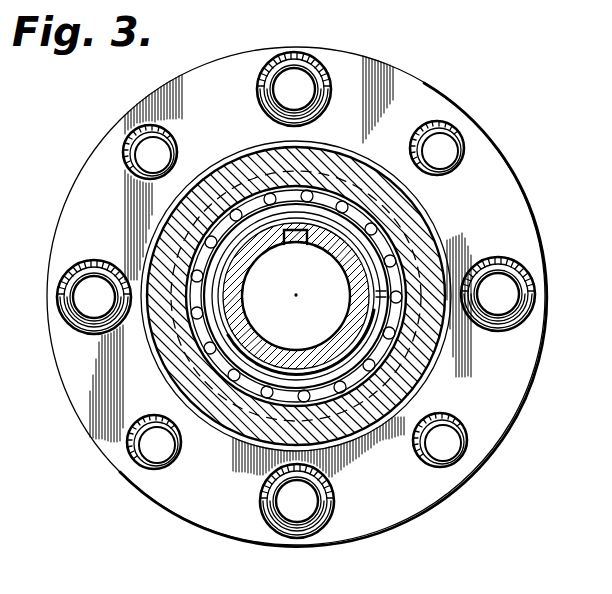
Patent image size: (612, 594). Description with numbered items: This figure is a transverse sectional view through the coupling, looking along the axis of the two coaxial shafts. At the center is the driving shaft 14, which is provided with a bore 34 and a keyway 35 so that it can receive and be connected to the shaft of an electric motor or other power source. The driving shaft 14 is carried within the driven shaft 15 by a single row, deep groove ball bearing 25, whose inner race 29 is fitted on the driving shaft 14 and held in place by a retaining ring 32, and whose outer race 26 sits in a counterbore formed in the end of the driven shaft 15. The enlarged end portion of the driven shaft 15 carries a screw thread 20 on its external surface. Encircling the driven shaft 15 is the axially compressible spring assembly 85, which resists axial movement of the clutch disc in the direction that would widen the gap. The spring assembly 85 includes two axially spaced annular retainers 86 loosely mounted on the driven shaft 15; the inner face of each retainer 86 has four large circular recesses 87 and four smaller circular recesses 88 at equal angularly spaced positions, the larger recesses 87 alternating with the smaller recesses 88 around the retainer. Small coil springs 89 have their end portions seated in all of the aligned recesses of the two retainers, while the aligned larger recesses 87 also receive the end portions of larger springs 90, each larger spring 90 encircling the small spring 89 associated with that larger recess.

The driving shaft 14 is at (240, 317).
The driven shaft 15 is at (434, 225).
The screw thread 20 is at (439, 243).
The ball bearing 25 is at (345, 395).
The outer race 26 is at (431, 364).
The inner race 29 is at (348, 273).
The retaining ring 32 is at (367, 327).
The bore 34 is at (247, 282).
The keyway 35 is at (295, 236).
The spring assembly 85 is at (401, 86).
The annular retainer 86 is at (504, 190).
The large circular recess 87 is at (316, 58).
The small circular recess 88 is at (464, 147).
The small coil spring 89 is at (324, 75).
The large spring 90 is at (277, 52).